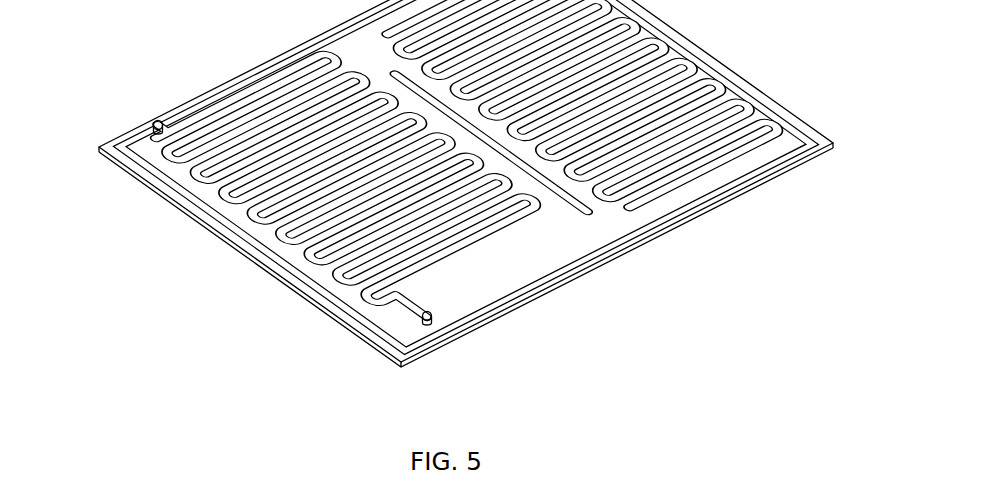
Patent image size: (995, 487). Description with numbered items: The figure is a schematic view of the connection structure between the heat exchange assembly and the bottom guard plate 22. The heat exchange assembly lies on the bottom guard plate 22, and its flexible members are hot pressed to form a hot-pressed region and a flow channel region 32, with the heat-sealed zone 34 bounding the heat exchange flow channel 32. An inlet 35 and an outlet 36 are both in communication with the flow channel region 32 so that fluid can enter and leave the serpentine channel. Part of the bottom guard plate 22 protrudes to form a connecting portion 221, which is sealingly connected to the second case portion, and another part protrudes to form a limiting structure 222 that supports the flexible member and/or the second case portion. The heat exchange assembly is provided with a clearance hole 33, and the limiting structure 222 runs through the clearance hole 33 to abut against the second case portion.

The bottom guard plate 22 is at (273, 252).
The connecting portion 221 is at (157, 193).
The limiting structure 222 is at (350, 283).
The flow channel region 32 is at (668, 225).
The clearance hole 33 is at (603, 252).
The heat-sealed zone 34 is at (720, 190).
The inlet 35 is at (447, 345).
The outlet 36 is at (133, 106).